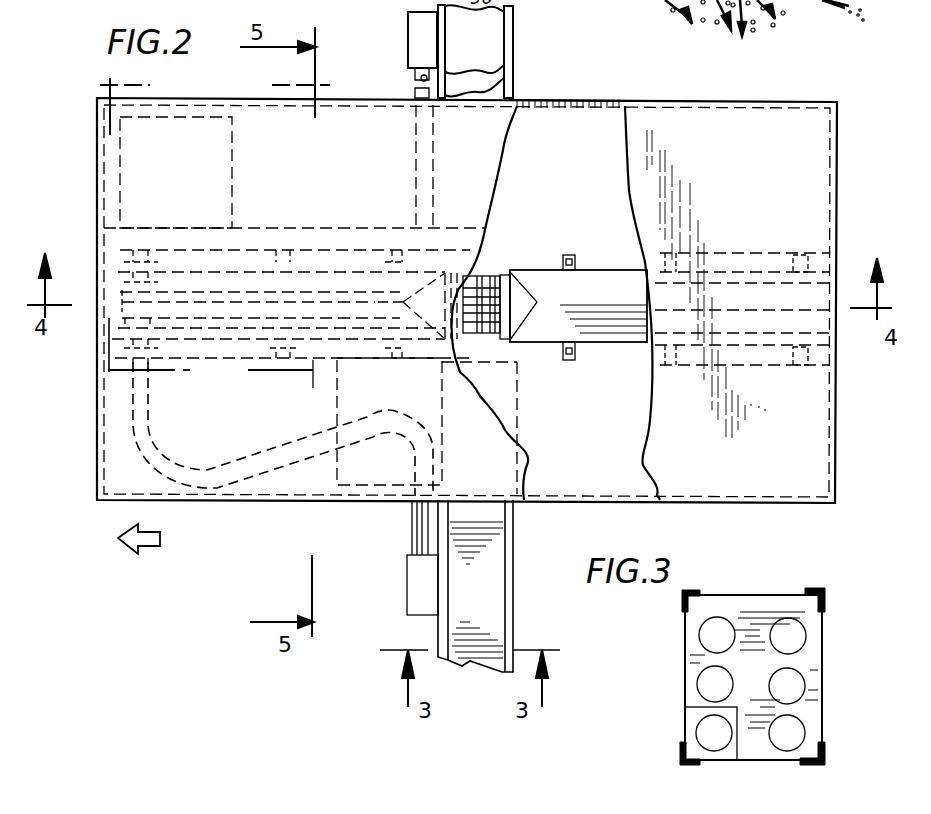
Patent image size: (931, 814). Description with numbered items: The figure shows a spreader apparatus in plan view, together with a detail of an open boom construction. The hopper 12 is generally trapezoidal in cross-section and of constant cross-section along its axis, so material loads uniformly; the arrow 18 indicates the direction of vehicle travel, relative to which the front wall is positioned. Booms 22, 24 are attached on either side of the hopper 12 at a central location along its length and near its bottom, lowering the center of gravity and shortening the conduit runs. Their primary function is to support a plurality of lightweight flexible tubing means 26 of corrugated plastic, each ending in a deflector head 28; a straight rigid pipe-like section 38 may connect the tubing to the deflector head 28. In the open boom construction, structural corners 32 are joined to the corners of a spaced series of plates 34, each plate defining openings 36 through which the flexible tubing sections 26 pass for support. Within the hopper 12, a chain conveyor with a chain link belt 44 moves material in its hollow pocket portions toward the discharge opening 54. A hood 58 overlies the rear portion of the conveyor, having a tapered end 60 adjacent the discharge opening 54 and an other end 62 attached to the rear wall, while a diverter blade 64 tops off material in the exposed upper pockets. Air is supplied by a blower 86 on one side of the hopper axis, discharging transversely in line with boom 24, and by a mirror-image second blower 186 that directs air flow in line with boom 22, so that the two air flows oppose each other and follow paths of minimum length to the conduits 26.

In FIG. 2, the hopper 12 is at (810, 160).
In FIG. 2, the direction of vehicle travel arrow 18 is at (150, 540).
In FIG. 2, the boom 22 is at (487, 37).
In FIG. 2, the boom 24 is at (503, 568).
In FIG. 2, the flexible tubing means 26 is at (420, 180).
In FIG. 2, the deflector head 28 is at (407, 585).
In FIG. 3, the deflector head 28 is at (728, 752).
In FIG. 3, the structural corner 32 is at (690, 592).
In FIG. 3, the plate 34 is at (765, 610).
In FIG. 3, the opening 36 is at (805, 636).
In FIG. 2, the rigid pipe-like section 38 is at (448, 498).
In FIG. 2, the chain link belt 44 is at (494, 266).
In FIG. 2, the discharge opening 54 is at (228, 297).
In FIG. 2, the hood 58 is at (612, 345).
In FIG. 2, the tapered end 60 is at (528, 308).
In FIG. 2, the other end 62 is at (838, 285).
In FIG. 2, the diverter blade 64 is at (505, 340).
In FIG. 2, the blower 86 is at (232, 176).
In FIG. 2, the second blower 186 is at (340, 377).